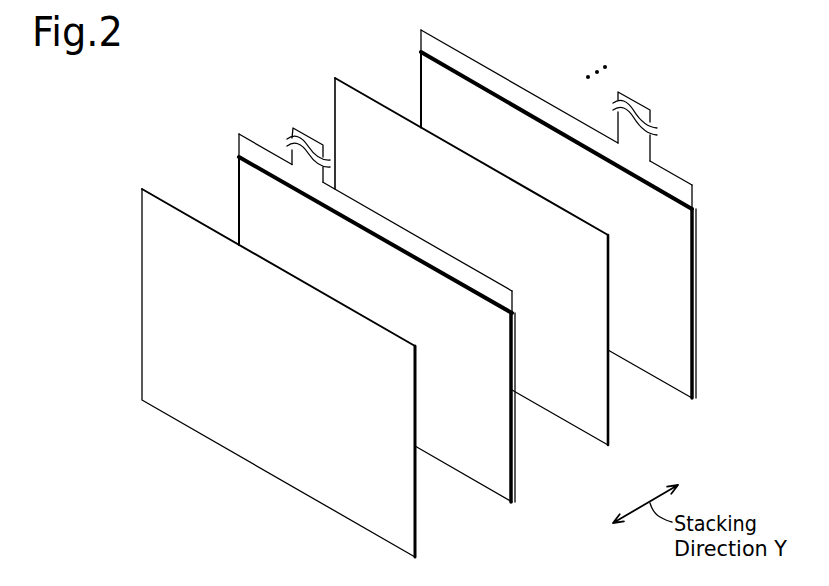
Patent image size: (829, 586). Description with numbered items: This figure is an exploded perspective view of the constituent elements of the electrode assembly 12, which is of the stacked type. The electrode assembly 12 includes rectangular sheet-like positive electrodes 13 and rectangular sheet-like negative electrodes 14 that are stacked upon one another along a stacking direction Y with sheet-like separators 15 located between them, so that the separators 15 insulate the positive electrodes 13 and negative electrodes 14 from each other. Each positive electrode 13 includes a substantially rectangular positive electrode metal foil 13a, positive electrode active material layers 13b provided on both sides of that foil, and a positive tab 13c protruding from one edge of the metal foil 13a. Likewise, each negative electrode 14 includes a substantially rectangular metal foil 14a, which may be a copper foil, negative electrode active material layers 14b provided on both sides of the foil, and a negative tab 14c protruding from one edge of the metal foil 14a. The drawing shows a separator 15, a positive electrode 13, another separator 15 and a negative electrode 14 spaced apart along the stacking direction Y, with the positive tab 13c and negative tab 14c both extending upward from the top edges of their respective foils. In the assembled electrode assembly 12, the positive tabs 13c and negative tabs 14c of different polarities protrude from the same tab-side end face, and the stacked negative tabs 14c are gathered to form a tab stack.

The electrode assembly 12 is at (251, 81).
The positive electrode 13 is at (408, 308).
The positive electrode metal foil 13a is at (513, 467).
The positive electrode active material layers 13b is at (515, 440).
The positive tab 13c is at (308, 127).
The negative electrode 14 is at (594, 227).
The metal foil 14a is at (695, 245).
The negative electrode active material layers 14b is at (698, 202).
The negative tab 14c is at (642, 100).
The separator 15 is at (417, 543).